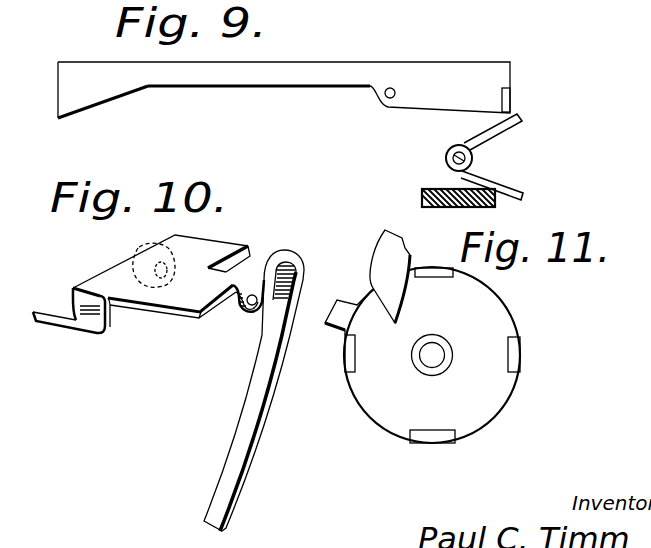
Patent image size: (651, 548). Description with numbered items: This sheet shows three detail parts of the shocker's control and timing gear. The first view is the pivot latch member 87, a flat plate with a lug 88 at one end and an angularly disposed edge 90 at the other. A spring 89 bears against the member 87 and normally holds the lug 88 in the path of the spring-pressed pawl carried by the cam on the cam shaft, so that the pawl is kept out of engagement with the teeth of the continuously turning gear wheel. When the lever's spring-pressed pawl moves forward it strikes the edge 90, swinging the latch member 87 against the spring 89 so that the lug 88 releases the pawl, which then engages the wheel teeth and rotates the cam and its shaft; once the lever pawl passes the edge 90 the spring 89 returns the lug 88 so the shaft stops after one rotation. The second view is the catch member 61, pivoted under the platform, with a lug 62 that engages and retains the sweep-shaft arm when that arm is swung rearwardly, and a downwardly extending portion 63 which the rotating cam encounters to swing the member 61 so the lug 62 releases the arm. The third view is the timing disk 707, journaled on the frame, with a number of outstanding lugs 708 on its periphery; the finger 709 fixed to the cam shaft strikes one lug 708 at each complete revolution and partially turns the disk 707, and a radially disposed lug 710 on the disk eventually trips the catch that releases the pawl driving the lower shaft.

In FIG. 9, the pivot latch member 87 is at (350, 82).
In FIG. 9, the lug 88 is at (512, 100).
In FIG. 9, the spring 89 is at (493, 138).
In FIG. 9, the angularly disposed edge 90 is at (112, 95).
In FIG. 10, the catch member 61 is at (193, 296).
In FIG. 10, the lug 62 is at (106, 326).
In FIG. 10, the downwardly extending portion 63 is at (257, 383).
In FIG. 11, the disk 707 is at (368, 385).
In FIG. 11, the outstanding lugs 708 is at (348, 360).
In FIG. 11, the finger 709 is at (385, 258).
In FIG. 11, the radially disposed lug 710 is at (342, 315).